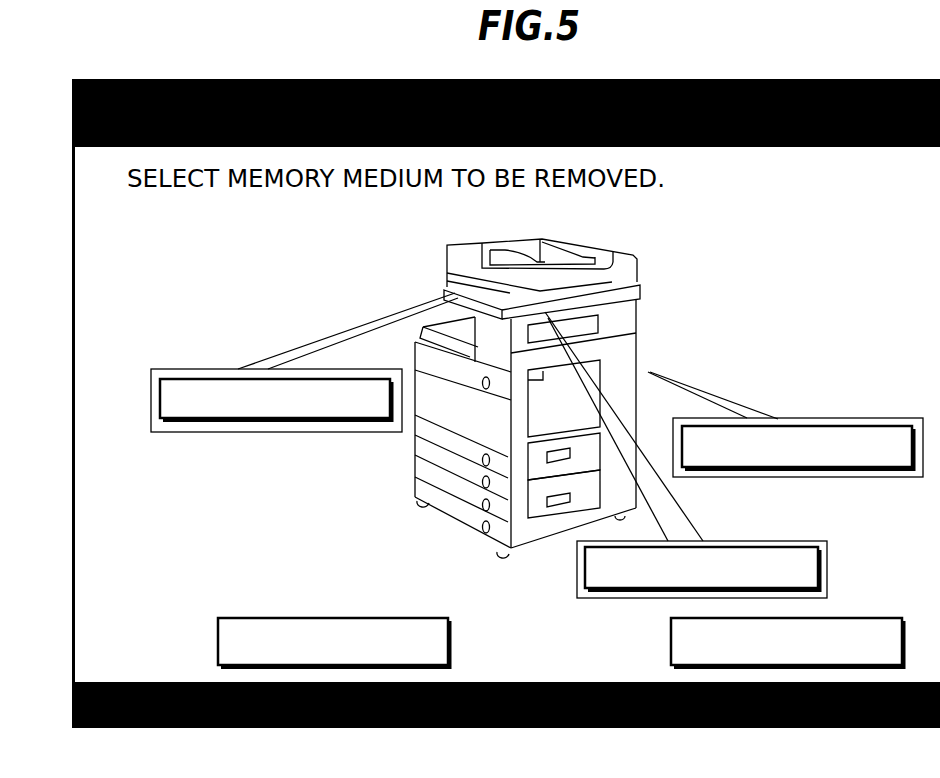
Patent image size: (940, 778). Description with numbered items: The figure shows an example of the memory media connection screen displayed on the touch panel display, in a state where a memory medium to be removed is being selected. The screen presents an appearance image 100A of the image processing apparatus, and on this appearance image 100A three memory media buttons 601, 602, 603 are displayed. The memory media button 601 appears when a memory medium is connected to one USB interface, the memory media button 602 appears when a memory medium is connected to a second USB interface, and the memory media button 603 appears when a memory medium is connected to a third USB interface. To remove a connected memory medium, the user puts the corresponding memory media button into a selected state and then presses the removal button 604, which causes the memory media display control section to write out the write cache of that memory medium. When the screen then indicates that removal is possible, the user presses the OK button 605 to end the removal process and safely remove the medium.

The appearance image 100A is at (650, 255).
The memory media button 601 is at (200, 378).
The memory media button 602 is at (820, 566).
The memory media button 603 is at (848, 425).
The removal button 604 is at (218, 641).
The OK button 605 is at (671, 640).